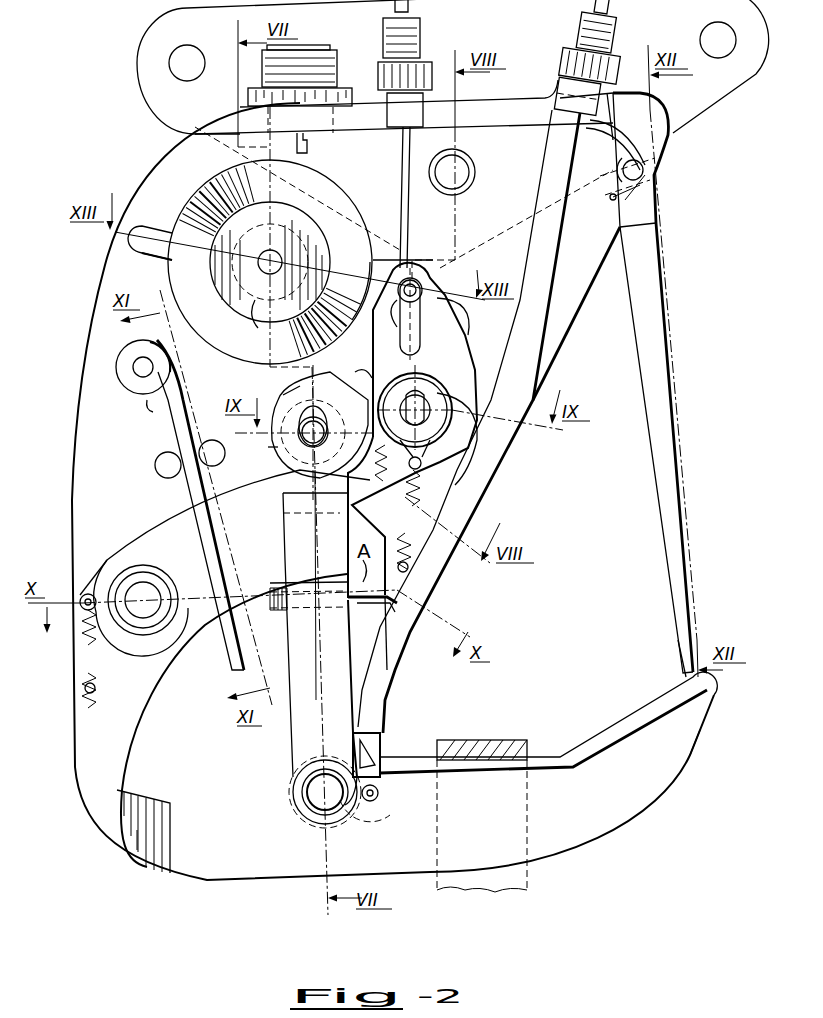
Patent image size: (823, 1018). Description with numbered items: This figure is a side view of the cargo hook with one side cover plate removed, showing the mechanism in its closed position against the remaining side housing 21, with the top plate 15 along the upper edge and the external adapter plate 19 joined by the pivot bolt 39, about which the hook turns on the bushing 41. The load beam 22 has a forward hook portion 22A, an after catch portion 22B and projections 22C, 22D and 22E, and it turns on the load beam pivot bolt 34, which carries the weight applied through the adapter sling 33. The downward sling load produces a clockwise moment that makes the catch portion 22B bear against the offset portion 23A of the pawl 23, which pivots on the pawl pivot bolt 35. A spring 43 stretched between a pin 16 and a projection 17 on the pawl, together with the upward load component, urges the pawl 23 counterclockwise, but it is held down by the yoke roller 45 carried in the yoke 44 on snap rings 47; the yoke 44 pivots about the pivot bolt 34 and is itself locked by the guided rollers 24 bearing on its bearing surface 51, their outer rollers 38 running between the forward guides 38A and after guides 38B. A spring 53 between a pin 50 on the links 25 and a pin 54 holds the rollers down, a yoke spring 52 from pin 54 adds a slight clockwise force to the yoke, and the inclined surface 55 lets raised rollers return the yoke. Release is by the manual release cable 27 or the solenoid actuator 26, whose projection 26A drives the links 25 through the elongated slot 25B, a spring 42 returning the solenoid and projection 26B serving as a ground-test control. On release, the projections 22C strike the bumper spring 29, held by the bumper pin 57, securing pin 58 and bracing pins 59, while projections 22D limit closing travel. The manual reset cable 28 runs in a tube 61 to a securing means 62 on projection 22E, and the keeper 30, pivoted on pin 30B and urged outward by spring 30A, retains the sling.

The top plate 15 is at (496, 120).
The pin 16 is at (92, 706).
The projection 17 is at (105, 575).
The adapter plate 19 is at (470, 35).
The side housing 21 is at (110, 518).
The load beam 22 is at (627, 720).
The forward hook portion 22A is at (613, 808).
The after catch portion 22B is at (260, 765).
The projections 22C is at (152, 790).
The projections 22D is at (273, 607).
The projection 22E is at (352, 814).
The pawl 23 is at (253, 546).
The offset portion 23A is at (375, 615).
The guided rollers 24 is at (462, 365).
The links 25 is at (425, 283).
The slot 25B is at (470, 325).
The solenoid actuator 26 is at (201, 302).
The projection 26A is at (380, 268).
The projection 26B is at (152, 226).
The manual release cable 27 is at (402, 148).
The manual reset cable 28 is at (598, 4).
The bumper spring 29 is at (180, 500).
The keeper 30 is at (676, 412).
The spring 30A is at (652, 196).
The pin 30B is at (660, 168).
The adapter sling 33 is at (482, 738).
The load beam pivot bolt 34 is at (312, 805).
The pawl pivot bolt 35 is at (170, 585).
The outer rollers 38 is at (505, 455).
The forward guides 38A is at (530, 372).
The after guides 38B is at (358, 373).
The bolt 39 is at (463, 182).
The bushing 41 is at (475, 172).
The spring 42 is at (258, 328).
The spring 43 is at (90, 680).
The yoke 44 is at (322, 675).
The yoke roller 45 is at (270, 447).
The snap rings 47 is at (320, 432).
The pin 50 is at (483, 490).
The bearing surface 51 is at (319, 445).
The yoke spring 52 is at (377, 478).
The spring 53 is at (406, 508).
The pin 54 is at (437, 590).
The inclined surface 55 is at (290, 388).
The bumper pin 57 is at (153, 410).
The securing pin 58 is at (178, 372).
The pins 59 is at (165, 478).
The tube 61 is at (553, 233).
The securing means 62 is at (392, 798).